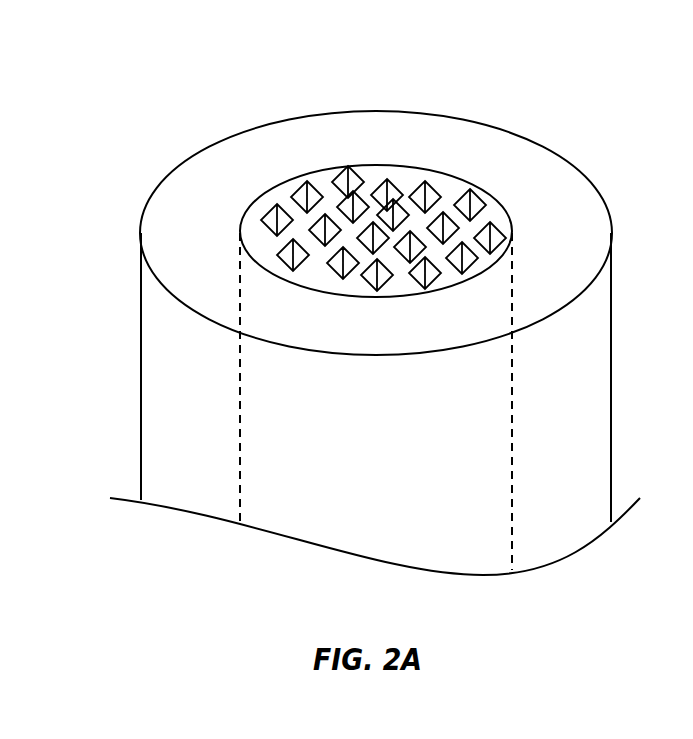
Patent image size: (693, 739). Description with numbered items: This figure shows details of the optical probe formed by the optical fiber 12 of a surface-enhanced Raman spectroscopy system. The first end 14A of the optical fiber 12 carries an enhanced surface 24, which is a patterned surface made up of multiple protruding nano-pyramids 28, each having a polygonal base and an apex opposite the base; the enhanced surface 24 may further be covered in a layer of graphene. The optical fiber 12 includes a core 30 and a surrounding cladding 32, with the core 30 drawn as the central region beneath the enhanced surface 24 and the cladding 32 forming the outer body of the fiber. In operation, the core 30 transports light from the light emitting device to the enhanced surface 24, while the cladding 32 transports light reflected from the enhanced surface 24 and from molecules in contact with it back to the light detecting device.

The optical fiber 12 is at (141, 347).
The first end 14A is at (242, 132).
The enhanced surface 24 is at (453, 197).
The nano-pyramids 28 is at (387, 180).
The core 30 is at (515, 276).
The cladding 32 is at (587, 380).